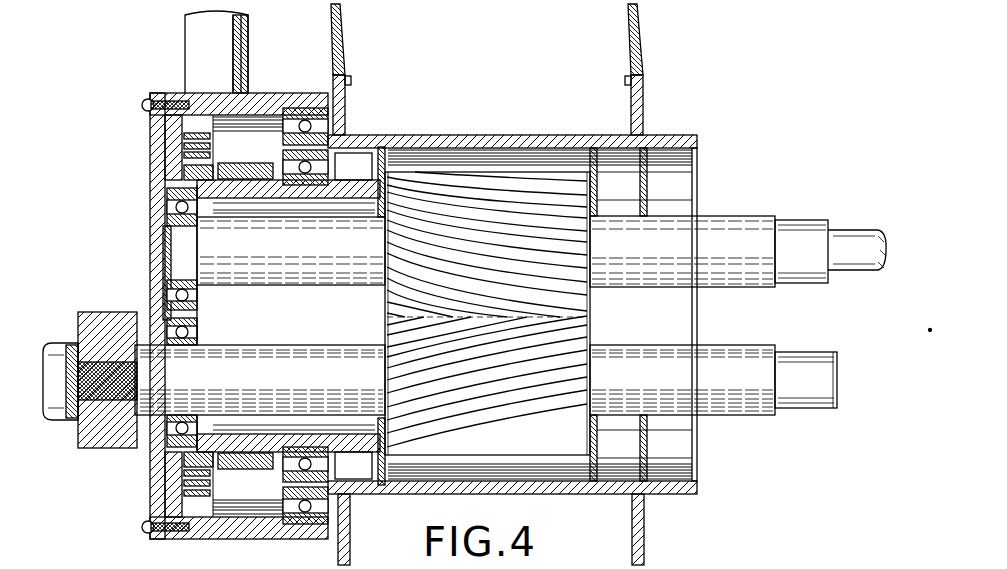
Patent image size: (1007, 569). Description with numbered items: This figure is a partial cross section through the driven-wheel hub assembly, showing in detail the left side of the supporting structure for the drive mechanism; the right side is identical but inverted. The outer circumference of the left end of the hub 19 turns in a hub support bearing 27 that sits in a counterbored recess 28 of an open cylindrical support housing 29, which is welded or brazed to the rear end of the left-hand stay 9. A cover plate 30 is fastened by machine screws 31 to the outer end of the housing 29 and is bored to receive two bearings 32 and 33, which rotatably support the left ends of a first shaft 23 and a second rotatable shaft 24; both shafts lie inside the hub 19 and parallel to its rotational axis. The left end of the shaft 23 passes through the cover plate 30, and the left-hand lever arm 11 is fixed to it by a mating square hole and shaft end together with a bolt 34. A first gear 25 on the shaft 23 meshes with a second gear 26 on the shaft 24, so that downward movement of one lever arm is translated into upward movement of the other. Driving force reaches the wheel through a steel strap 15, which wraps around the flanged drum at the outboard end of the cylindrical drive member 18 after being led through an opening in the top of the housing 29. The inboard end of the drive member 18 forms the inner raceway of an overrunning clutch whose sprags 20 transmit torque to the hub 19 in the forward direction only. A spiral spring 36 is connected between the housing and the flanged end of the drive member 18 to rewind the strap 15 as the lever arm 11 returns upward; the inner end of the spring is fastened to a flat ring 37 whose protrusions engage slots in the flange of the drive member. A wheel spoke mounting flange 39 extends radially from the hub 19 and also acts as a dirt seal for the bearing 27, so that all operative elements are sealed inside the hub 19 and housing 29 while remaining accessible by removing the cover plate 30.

The left-hand stay 9 is at (197, 35).
The left-hand lever arm 11 is at (92, 442).
The steel strap 15 is at (200, 182).
The rotatable drive member 18 is at (165, 232).
The hub 19 is at (507, 145).
The sprags 20 is at (362, 163).
The first shaft 23 is at (317, 332).
The second rotatable shaft 24 is at (233, 268).
The first gear 25 is at (415, 445).
The second gear 26 is at (475, 185).
The hub support bearing 27 is at (313, 125).
The counterbored recess 28 is at (295, 110).
The cylindrical support housing 29 is at (257, 97).
The cover plate 30 is at (155, 152).
The machine screws 31 is at (145, 106).
The bearing 32 is at (170, 438).
The bearing 33 is at (172, 292).
The bolt 34 is at (48, 408).
The spiral spring 36 is at (213, 142).
The flat ring 37 is at (190, 160).
The wheel spoke mounting flange 39 is at (347, 100).